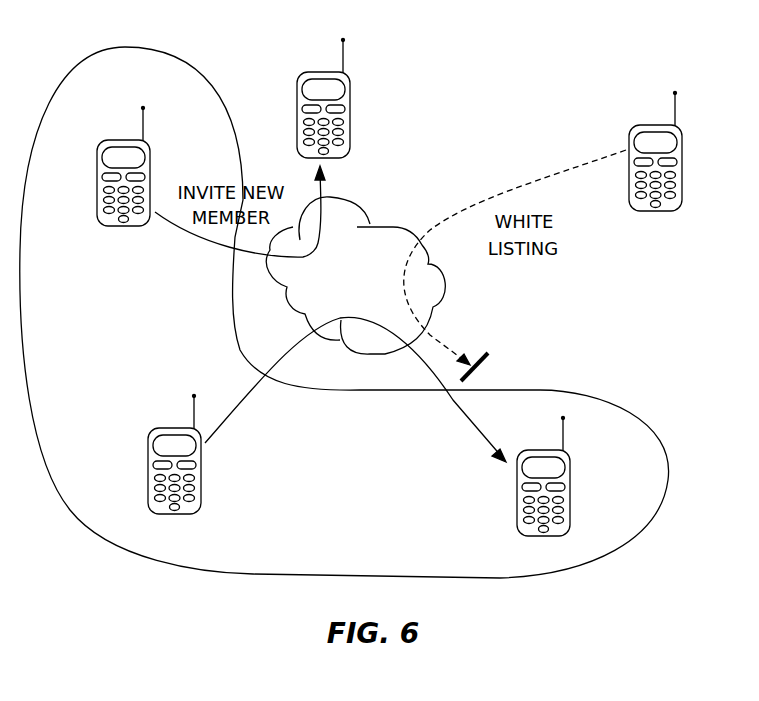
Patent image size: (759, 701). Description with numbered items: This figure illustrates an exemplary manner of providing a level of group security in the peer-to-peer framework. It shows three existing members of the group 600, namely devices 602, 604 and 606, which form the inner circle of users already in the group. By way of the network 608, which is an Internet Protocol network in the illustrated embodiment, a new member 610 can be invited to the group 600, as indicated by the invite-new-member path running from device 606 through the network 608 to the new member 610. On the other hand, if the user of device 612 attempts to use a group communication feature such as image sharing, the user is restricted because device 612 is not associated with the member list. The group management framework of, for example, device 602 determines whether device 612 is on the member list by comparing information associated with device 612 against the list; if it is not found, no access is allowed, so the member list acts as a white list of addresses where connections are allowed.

The group 600 is at (335, 501).
The device 602 is at (537, 449).
The device 604 is at (167, 427).
The device 606 is at (117, 139).
The network 608 is at (390, 226).
The new member 610 is at (318, 71).
The device 612 is at (648, 124).